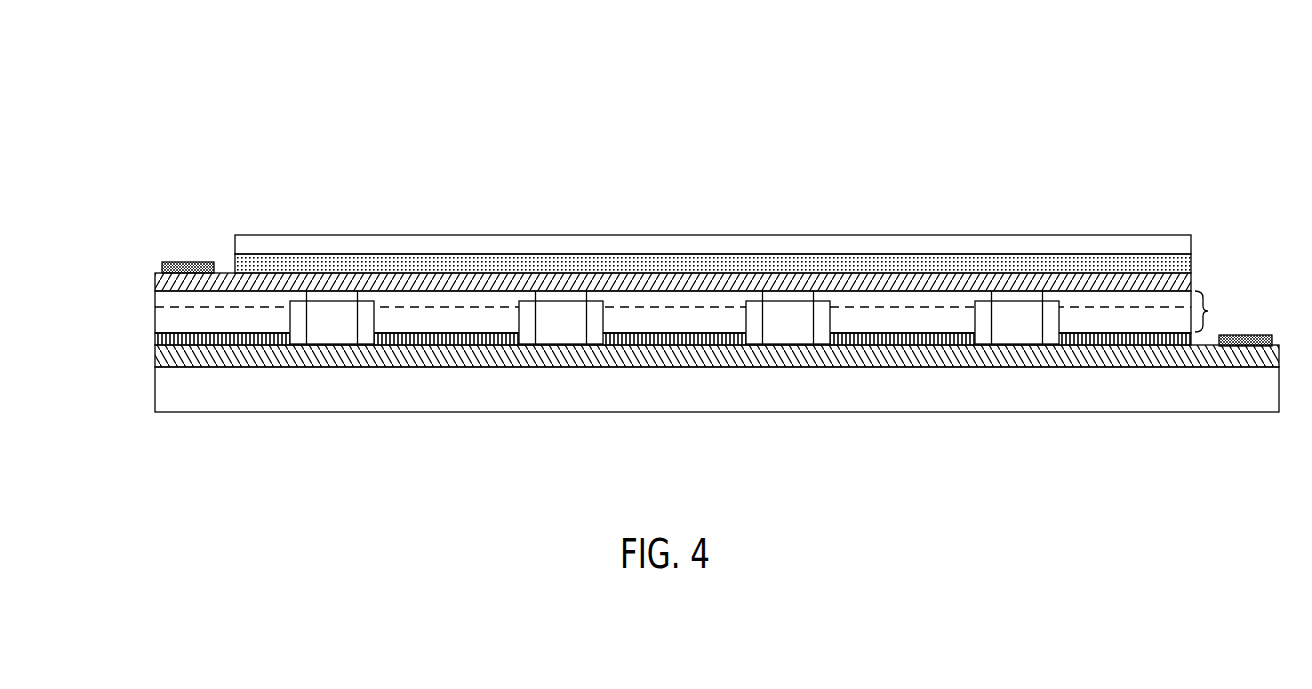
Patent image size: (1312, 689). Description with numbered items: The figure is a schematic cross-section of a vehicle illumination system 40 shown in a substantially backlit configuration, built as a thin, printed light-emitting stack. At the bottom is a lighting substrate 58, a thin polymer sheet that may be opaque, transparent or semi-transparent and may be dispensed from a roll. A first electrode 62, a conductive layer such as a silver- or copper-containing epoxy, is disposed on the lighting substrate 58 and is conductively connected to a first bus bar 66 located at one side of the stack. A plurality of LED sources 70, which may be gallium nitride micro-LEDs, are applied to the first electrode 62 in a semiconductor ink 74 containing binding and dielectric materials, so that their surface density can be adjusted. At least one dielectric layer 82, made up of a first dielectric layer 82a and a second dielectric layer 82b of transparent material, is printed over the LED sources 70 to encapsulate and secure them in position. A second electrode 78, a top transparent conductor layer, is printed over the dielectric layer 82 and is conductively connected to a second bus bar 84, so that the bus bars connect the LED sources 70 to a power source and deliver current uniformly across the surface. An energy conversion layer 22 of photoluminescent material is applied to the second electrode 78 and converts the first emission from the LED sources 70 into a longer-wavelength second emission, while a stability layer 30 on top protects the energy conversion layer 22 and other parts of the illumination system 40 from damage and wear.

The illumination system 40 is at (871, 65).
The energy conversion layer 22 is at (1188, 263).
The stability layer 30 is at (295, 240).
The lighting substrate 58 is at (155, 393).
The first electrode 62 is at (155, 358).
The first bus bar 66 is at (1253, 335).
The LED sources 70 is at (330, 296).
The semiconductor ink 74 is at (155, 339).
The second electrode 78 is at (155, 281).
The dielectric layer 82 is at (1208, 311).
The first dielectric layer 82a is at (155, 320).
The second dielectric layer 82b is at (155, 298).
The second bus bar 84 is at (190, 262).